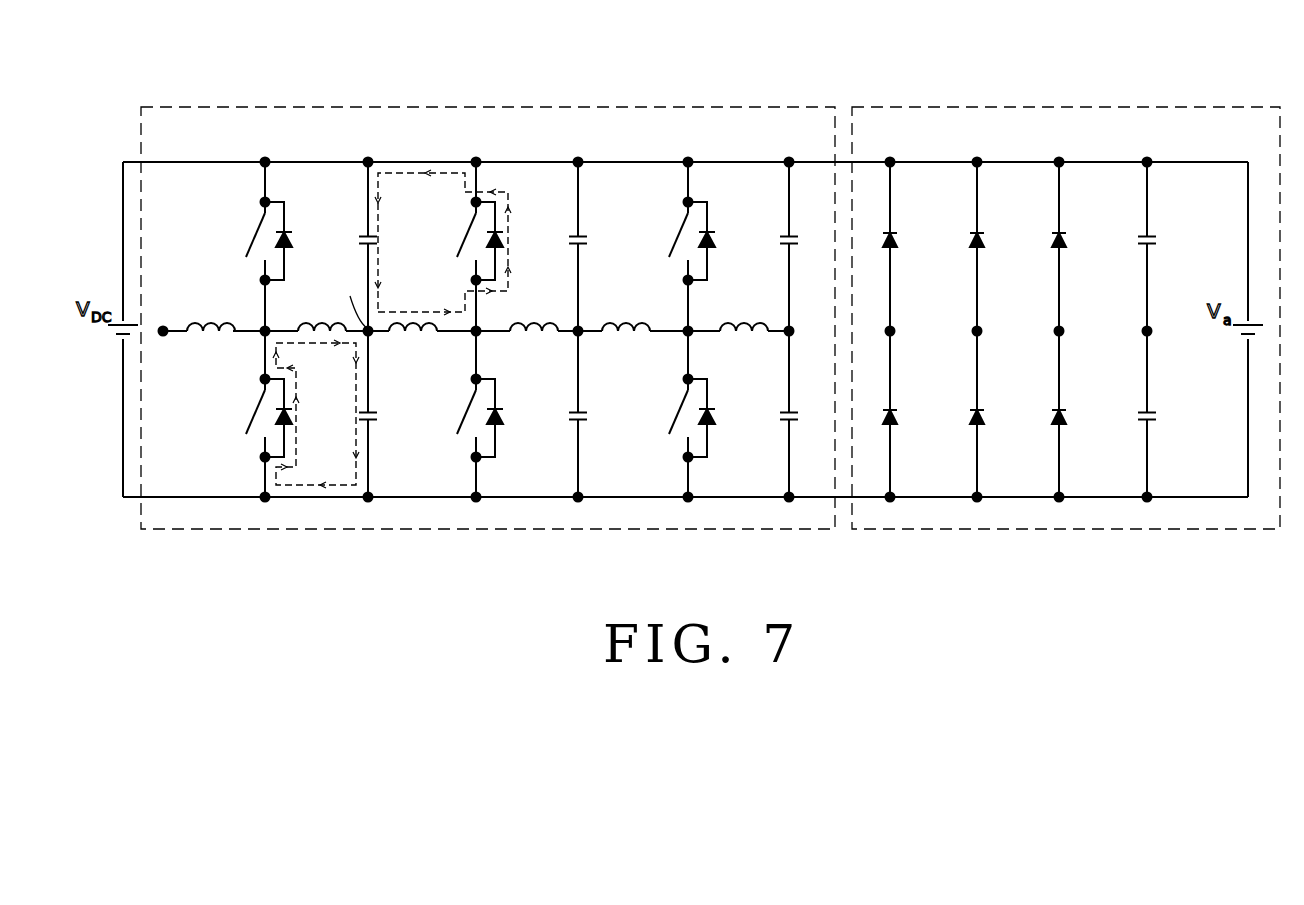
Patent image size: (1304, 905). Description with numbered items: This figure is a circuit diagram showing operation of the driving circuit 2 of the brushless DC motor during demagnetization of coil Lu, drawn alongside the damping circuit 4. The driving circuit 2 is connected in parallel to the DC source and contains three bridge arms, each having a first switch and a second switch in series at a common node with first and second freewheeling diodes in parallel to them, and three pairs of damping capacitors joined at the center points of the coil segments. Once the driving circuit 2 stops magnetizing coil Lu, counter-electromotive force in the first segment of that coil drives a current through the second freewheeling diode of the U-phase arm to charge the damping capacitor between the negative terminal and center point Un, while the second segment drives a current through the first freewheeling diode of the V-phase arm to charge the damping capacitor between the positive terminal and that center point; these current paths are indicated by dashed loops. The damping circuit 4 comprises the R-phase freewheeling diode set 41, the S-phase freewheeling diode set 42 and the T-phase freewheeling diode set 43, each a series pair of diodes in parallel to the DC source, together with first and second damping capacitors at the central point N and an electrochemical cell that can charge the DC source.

The driving circuit 2 is at (578, 107).
The damping circuit 4 is at (1130, 105).
The R-phase freewheeling diode set 41 is at (912, 187).
The S-phase freewheeling diode set 42 is at (999, 187).
The T-phase freewheeling diode set 43 is at (1080, 187).